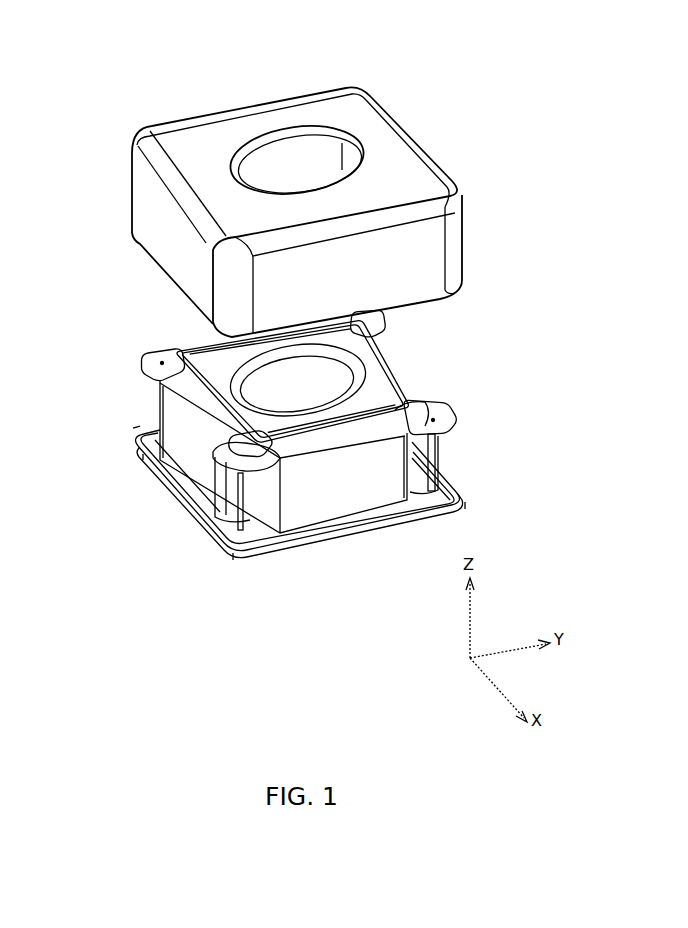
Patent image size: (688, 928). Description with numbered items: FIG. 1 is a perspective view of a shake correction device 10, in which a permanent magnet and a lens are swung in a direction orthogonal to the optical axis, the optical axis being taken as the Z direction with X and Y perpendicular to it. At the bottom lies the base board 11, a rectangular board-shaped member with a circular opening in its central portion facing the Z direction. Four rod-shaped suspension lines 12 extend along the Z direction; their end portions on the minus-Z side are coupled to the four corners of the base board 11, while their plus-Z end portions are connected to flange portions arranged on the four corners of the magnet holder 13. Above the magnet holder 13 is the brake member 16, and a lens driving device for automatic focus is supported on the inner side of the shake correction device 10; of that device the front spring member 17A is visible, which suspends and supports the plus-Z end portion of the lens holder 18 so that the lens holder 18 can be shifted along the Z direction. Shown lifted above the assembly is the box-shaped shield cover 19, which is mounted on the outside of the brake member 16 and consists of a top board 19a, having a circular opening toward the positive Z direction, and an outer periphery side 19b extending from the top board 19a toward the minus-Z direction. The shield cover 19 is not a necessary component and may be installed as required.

The shake correction device 10 is at (106, 62).
The base board 11 is at (133, 428).
The suspension line 12 is at (445, 460).
The magnet holder 13 is at (253, 498).
The brake member 16 is at (357, 490).
The front spring member 17A is at (430, 400).
The lens holder 18 is at (337, 353).
The shield cover 19 is at (410, 163).
The top board 19a is at (280, 110).
The outer periphery side 19b is at (405, 263).